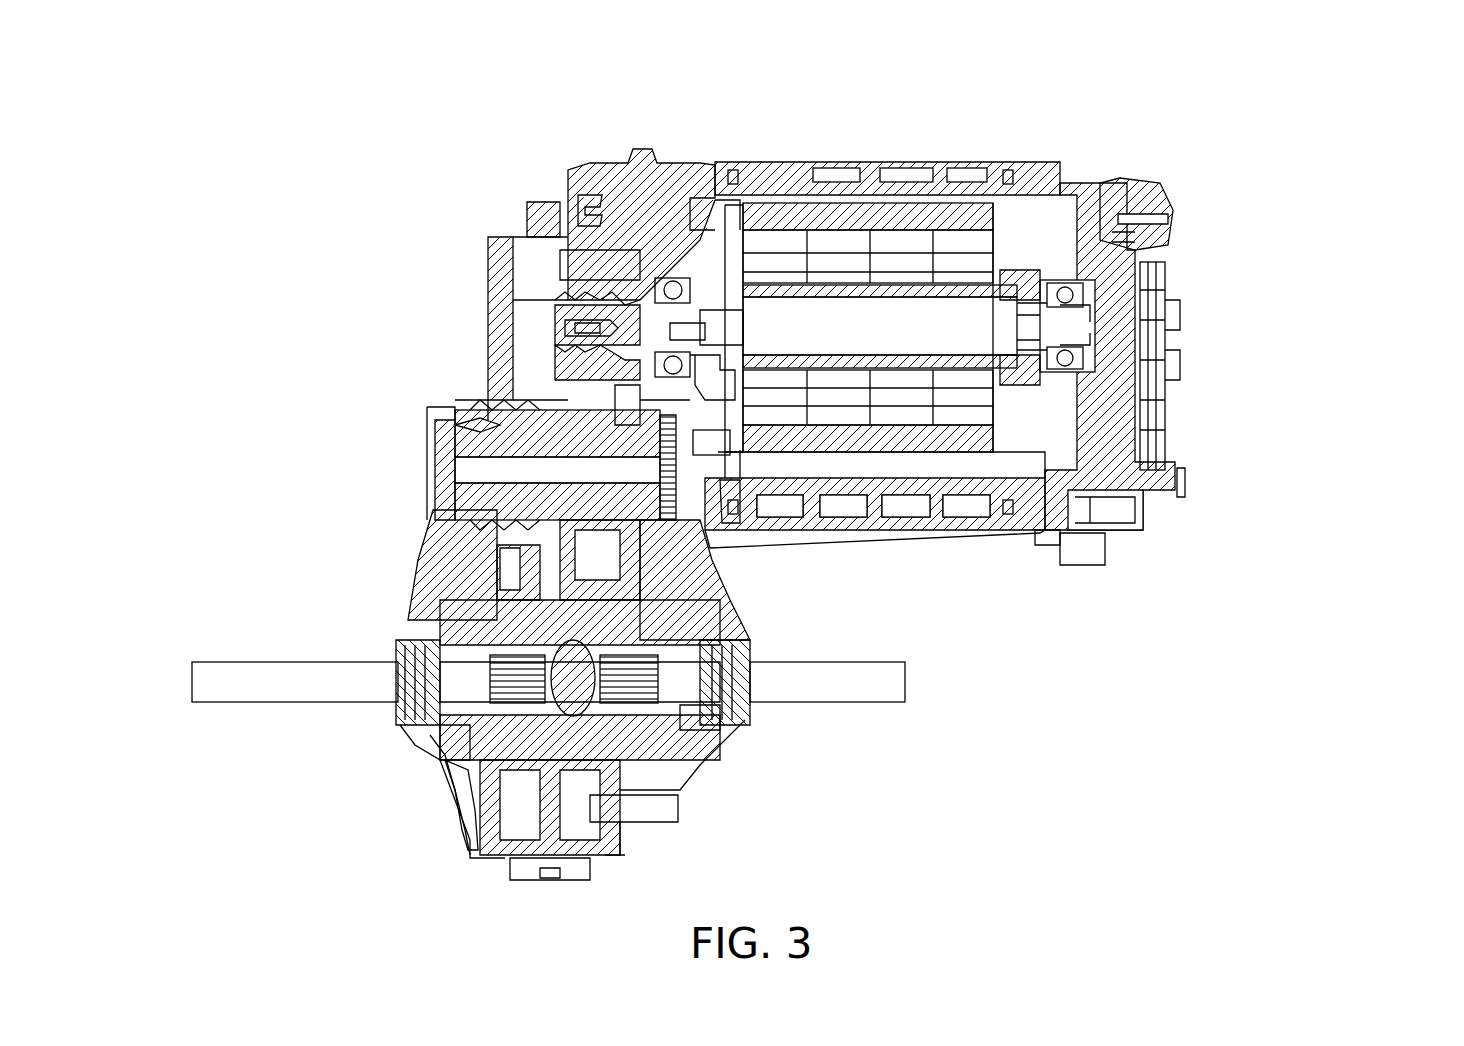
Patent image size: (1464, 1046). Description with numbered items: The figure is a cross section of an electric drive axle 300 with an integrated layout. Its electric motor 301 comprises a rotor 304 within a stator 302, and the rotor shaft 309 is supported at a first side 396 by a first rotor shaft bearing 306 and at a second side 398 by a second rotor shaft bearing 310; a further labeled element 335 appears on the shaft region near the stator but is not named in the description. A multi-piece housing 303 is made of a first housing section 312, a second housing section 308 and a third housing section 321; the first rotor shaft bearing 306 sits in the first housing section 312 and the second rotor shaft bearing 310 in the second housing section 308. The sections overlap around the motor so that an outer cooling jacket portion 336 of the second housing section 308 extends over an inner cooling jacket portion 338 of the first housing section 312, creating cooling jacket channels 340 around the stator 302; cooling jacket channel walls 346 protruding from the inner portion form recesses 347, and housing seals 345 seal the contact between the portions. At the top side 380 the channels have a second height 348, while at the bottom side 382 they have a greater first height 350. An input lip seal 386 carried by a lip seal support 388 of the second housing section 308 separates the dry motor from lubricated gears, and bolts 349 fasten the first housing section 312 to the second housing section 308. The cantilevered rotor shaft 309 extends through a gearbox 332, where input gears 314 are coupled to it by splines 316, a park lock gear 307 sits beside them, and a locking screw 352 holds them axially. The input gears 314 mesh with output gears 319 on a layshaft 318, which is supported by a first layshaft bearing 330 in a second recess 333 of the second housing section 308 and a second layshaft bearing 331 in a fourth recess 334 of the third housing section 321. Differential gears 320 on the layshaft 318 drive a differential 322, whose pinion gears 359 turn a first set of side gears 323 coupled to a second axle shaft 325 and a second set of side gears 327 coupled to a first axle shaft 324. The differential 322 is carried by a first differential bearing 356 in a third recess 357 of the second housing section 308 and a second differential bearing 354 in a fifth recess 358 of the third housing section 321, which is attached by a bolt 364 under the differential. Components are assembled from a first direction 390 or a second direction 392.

The electric drive axle 300 is at (1365, 85).
The electric motor 301 is at (1095, 285).
The stator 302 is at (935, 205).
The multi-piece housing 303 is at (792, 597).
The rotor 304 is at (1125, 190).
The first rotor shaft bearing 306 is at (1170, 290).
The park lock gear 307 is at (640, 300).
The second housing section 308 is at (652, 162).
The rotor shaft 309 is at (610, 335).
The second rotor shaft bearing 310 is at (690, 350).
The first housing section 312 is at (1130, 215).
The input gears 314 is at (580, 305).
The splines 316 is at (560, 330).
The layshaft 318 is at (470, 470).
The output gears 319 is at (660, 395).
The differential gears 320 is at (500, 476).
The third housing section 321 is at (465, 520).
The differential 322 is at (520, 630).
The first set of side gears 323 is at (470, 640).
The first axle shaft 324 is at (905, 690).
The second axle shaft 325 is at (250, 665).
The second set of side gears 327 is at (725, 628).
The first layshaft bearing 330 is at (640, 420).
The second layshaft bearing 331 is at (465, 438).
The gearbox 332 is at (480, 340).
The second recess 333 is at (700, 469).
The fourth recess 334 is at (475, 430).
The rotor shaft 335 is at (738, 292).
The outer cooling jacket portion 336 is at (830, 165).
The inner cooling jacket portion 338 is at (928, 162).
The cooling jacket channels 340 is at (795, 162).
The housing seals 345 is at (740, 175).
The cooling jacket channel walls 346 is at (872, 150).
The recesses 347 is at (848, 150).
The second height 348 is at (1020, 270).
The bolts 349 is at (1100, 158).
The first height 350 is at (1050, 545).
The locking screw 352 is at (570, 318).
The second differential bearing 354 is at (440, 722).
The first differential bearing 356 is at (690, 735).
The third recess 357 is at (710, 712).
The fifth recess 358 is at (450, 742).
The pinion gears 359 is at (570, 758).
The bolt 364 is at (560, 872).
The top side 380 is at (752, 130).
The bottom side 382 is at (950, 640).
The input lip seal 386 is at (726, 340).
The lip seal support 388 is at (730, 388).
The first direction 390 is at (215, 208).
The second direction 392 is at (1315, 336).
The first side 396 is at (1262, 393).
The second side 398 is at (265, 420).